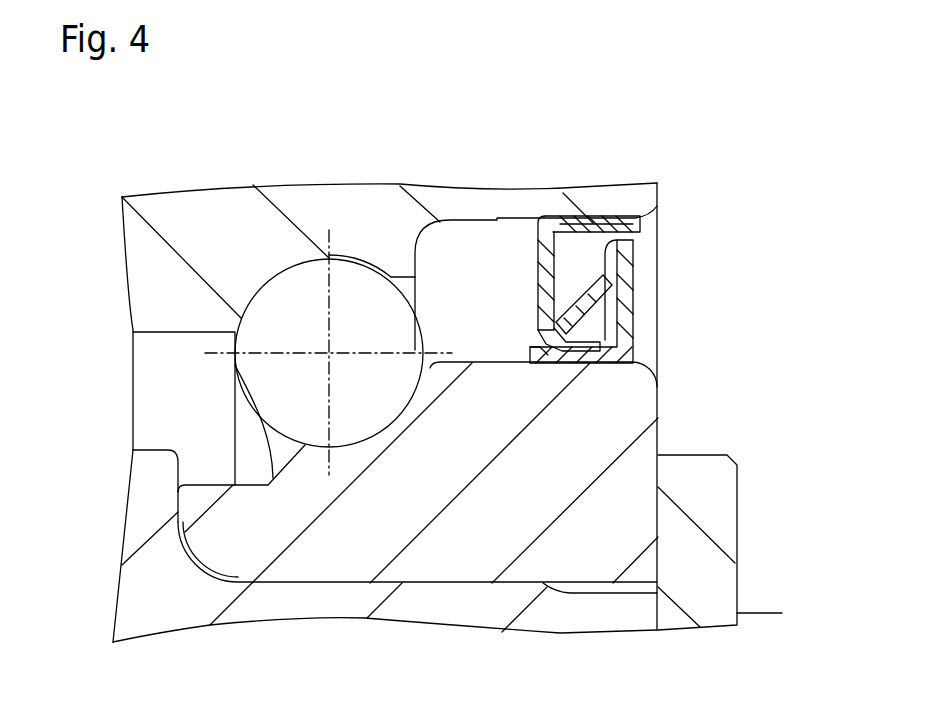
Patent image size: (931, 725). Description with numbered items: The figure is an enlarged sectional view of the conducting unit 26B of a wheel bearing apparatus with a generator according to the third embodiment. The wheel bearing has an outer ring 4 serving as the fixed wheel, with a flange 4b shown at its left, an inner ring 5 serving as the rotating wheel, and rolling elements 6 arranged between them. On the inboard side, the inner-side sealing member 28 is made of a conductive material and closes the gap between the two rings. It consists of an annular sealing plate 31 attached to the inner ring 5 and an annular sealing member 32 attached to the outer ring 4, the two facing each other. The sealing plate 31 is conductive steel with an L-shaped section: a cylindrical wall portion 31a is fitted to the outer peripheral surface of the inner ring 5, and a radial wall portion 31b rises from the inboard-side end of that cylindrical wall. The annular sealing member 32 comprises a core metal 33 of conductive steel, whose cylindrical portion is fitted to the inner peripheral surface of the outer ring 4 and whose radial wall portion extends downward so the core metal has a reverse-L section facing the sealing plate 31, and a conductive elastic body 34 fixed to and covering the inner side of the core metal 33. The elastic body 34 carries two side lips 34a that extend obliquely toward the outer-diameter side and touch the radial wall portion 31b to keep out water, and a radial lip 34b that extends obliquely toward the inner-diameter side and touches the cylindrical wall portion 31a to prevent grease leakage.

The outer ring 4 is at (398, 200).
The flange of outer ring 4b is at (215, 215).
The inner ring 5 is at (427, 612).
The rolling elements 6 is at (257, 373).
The conducting unit 26B is at (633, 300).
The inner-side sealing member 28 is at (545, 303).
The sealing plate 31 is at (650, 404).
The cylindrical wall portion 31a is at (570, 345).
The radial wall portion 31b is at (618, 330).
The annular sealing member 32 is at (527, 272).
The core metal 33 is at (577, 216).
The elastic body 34 is at (548, 300).
The side lips 34a is at (608, 298).
The radial lip 34b is at (560, 350).